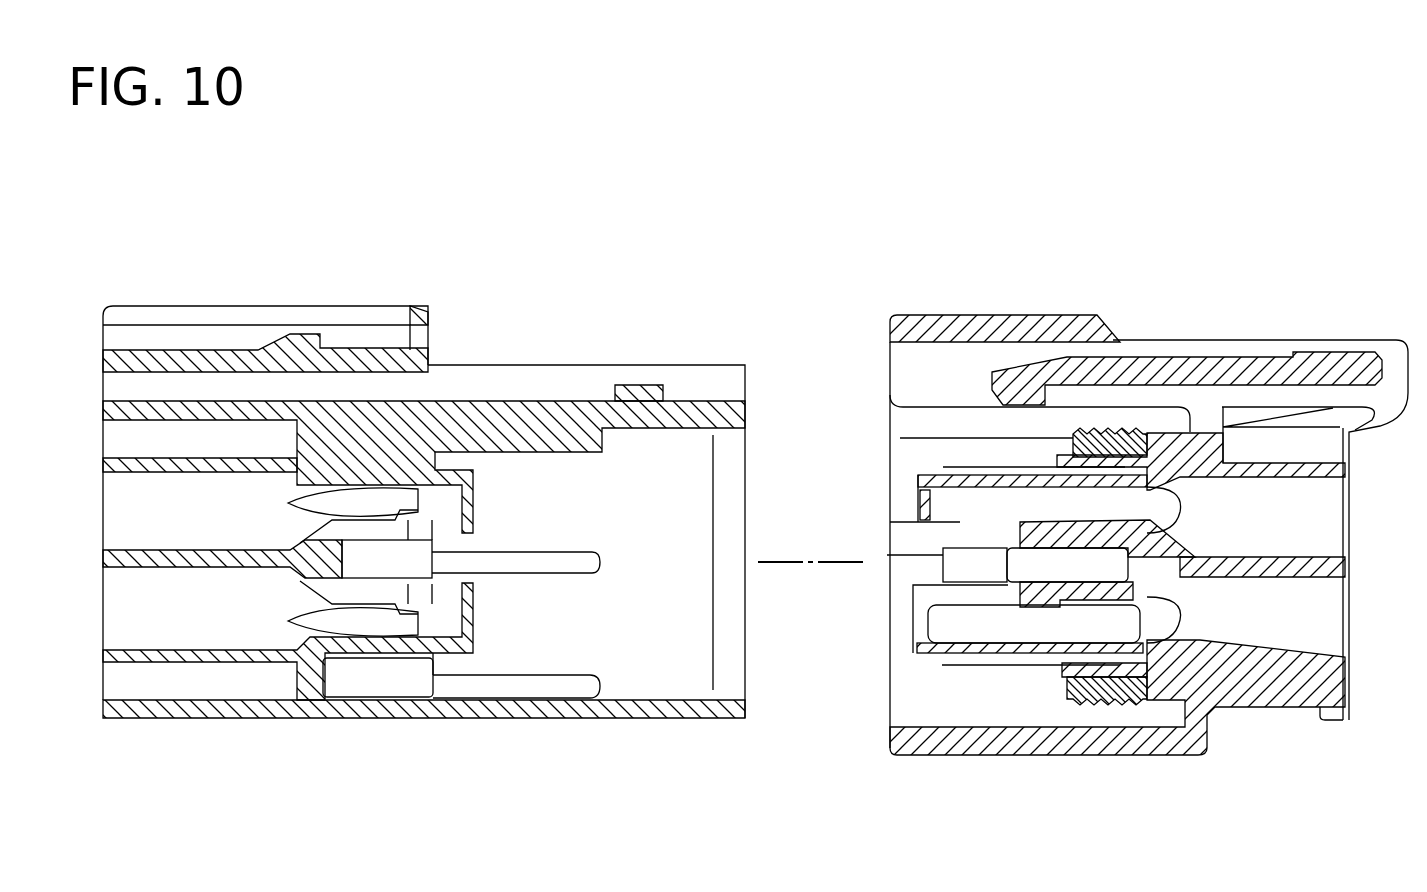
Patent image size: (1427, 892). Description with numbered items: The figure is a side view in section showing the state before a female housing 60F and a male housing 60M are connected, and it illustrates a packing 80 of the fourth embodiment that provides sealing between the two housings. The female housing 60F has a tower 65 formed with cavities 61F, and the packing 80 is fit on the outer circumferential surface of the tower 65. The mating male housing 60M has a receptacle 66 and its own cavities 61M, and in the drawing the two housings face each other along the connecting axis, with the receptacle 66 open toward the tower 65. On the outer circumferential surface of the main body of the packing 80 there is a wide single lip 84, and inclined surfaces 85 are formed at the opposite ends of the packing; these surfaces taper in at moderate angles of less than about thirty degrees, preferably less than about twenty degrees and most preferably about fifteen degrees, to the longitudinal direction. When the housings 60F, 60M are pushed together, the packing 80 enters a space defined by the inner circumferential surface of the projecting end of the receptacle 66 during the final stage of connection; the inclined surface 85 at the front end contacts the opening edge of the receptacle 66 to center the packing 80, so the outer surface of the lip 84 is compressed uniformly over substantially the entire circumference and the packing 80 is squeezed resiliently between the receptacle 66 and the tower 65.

The male housing 60M is at (488, 305).
The female housing 60F is at (1230, 285).
The receptacle 66 is at (692, 412).
The cavities of the male housing 61M is at (397, 629).
The cavities 61F is at (994, 642).
The wide single lip 84 is at (1115, 455).
The inclined surfaces 85 is at (1073, 440).
The tower 65 is at (1082, 675).
The packing 80 is at (1128, 692).